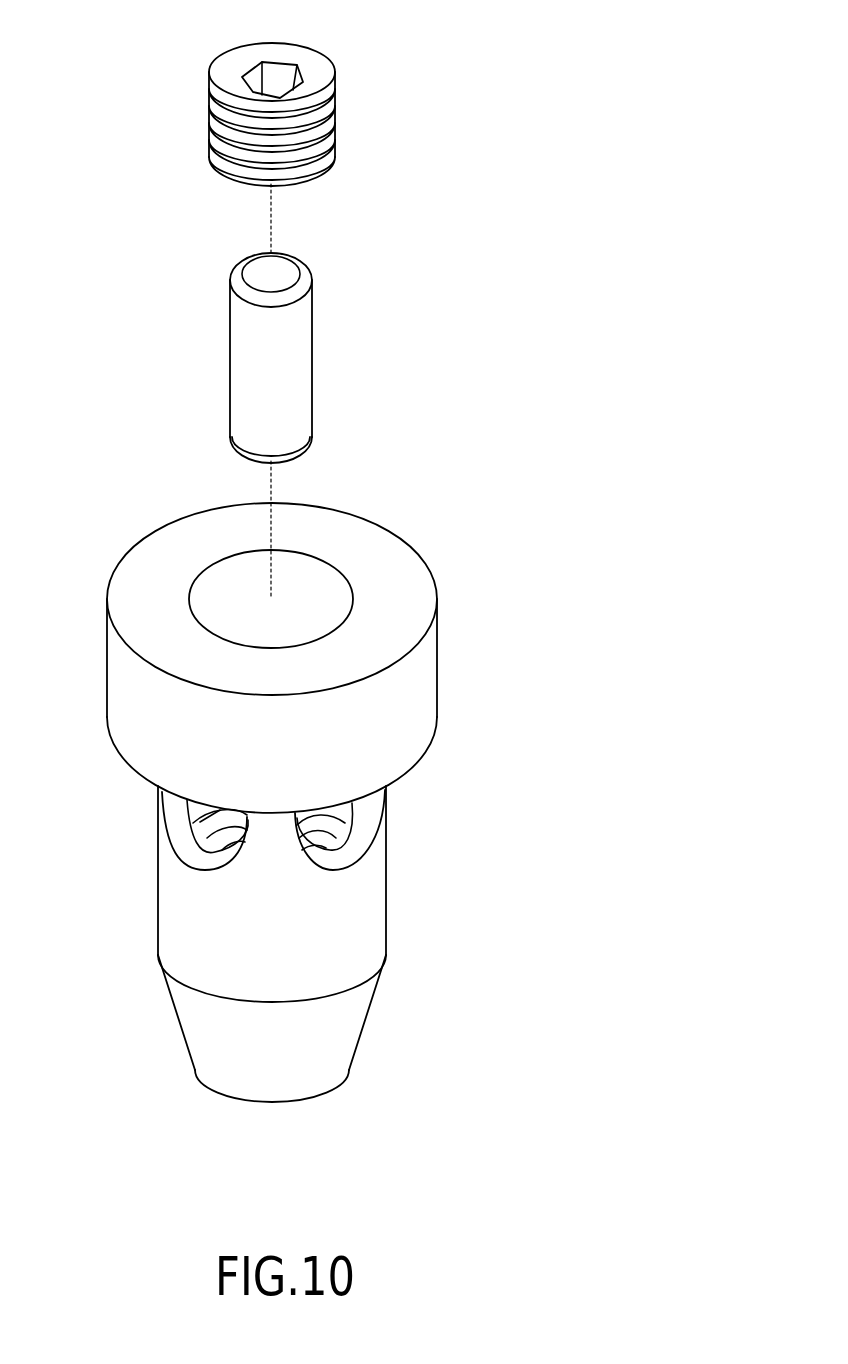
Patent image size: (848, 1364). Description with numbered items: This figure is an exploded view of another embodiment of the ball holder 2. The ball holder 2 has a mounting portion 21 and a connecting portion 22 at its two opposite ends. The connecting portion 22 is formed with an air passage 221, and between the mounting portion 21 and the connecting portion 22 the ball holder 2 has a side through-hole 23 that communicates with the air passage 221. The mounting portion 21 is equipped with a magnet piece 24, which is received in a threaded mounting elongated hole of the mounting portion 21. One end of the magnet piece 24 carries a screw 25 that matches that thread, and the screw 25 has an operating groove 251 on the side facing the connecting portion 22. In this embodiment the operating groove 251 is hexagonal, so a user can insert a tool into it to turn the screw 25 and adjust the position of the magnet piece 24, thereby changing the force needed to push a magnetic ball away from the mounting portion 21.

The ball holder 2 is at (115, 472).
The mounting portion 21 is at (352, 1028).
The connecting portion 22 is at (435, 687).
The air passage 221 is at (332, 577).
The side through-hole 23 is at (362, 863).
The magnet piece 24 is at (302, 345).
The screw 25 is at (335, 113).
The operating groove 251 is at (255, 67).